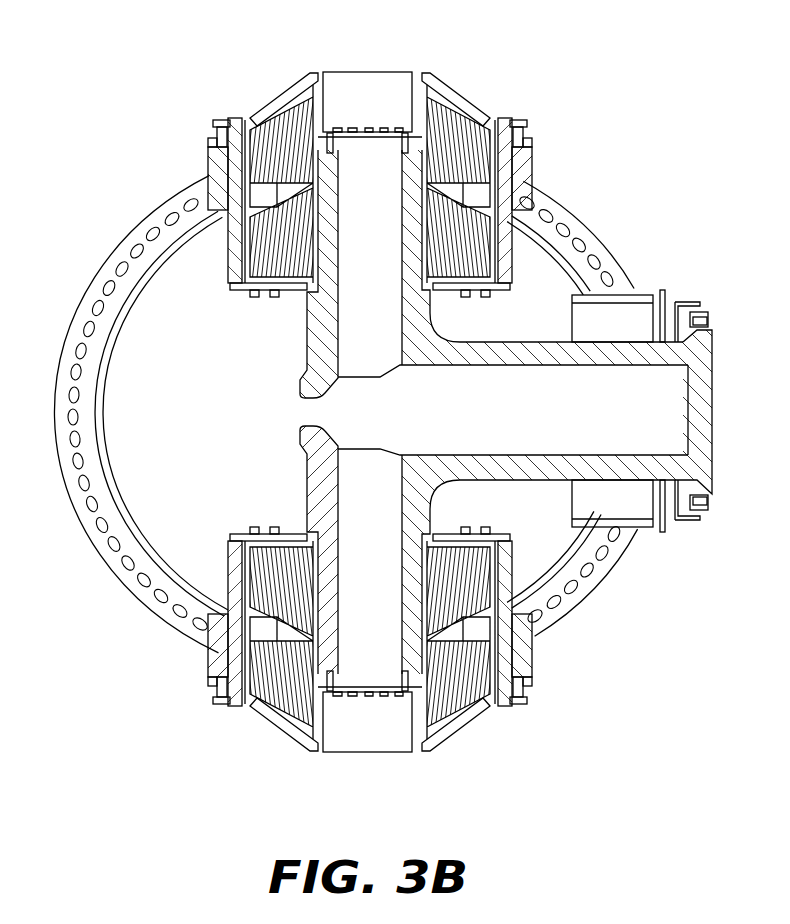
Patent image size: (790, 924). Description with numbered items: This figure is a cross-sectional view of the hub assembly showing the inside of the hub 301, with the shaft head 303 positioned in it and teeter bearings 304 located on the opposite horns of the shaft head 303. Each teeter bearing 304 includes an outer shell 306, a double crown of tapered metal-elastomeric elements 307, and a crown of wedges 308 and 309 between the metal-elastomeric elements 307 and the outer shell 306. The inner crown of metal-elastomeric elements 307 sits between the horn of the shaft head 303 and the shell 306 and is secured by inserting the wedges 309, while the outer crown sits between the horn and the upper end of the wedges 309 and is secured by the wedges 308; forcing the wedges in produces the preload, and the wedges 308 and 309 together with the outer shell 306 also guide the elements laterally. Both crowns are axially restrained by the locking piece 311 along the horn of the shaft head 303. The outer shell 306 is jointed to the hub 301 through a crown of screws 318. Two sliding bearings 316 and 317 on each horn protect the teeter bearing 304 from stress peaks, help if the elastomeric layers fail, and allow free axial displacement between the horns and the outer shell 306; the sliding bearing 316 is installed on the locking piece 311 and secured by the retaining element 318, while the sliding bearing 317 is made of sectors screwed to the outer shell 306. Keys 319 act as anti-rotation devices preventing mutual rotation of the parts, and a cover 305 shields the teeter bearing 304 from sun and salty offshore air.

The hub 301 is at (122, 513).
The shaft head 303 is at (468, 368).
The teeter bearing 304 is at (237, 543).
The cover 305 is at (293, 76).
The outer shell 306 is at (228, 283).
The metal-elastomeric elements 307 is at (223, 121).
The wedges 308 is at (210, 132).
The wedges 309 is at (227, 233).
The locking piece 311 is at (412, 102).
The sliding bearing 316 is at (438, 92).
The sliding bearing 317 is at (467, 291).
The retaining element / screws 318 is at (523, 123).
The keys 319 is at (418, 232).